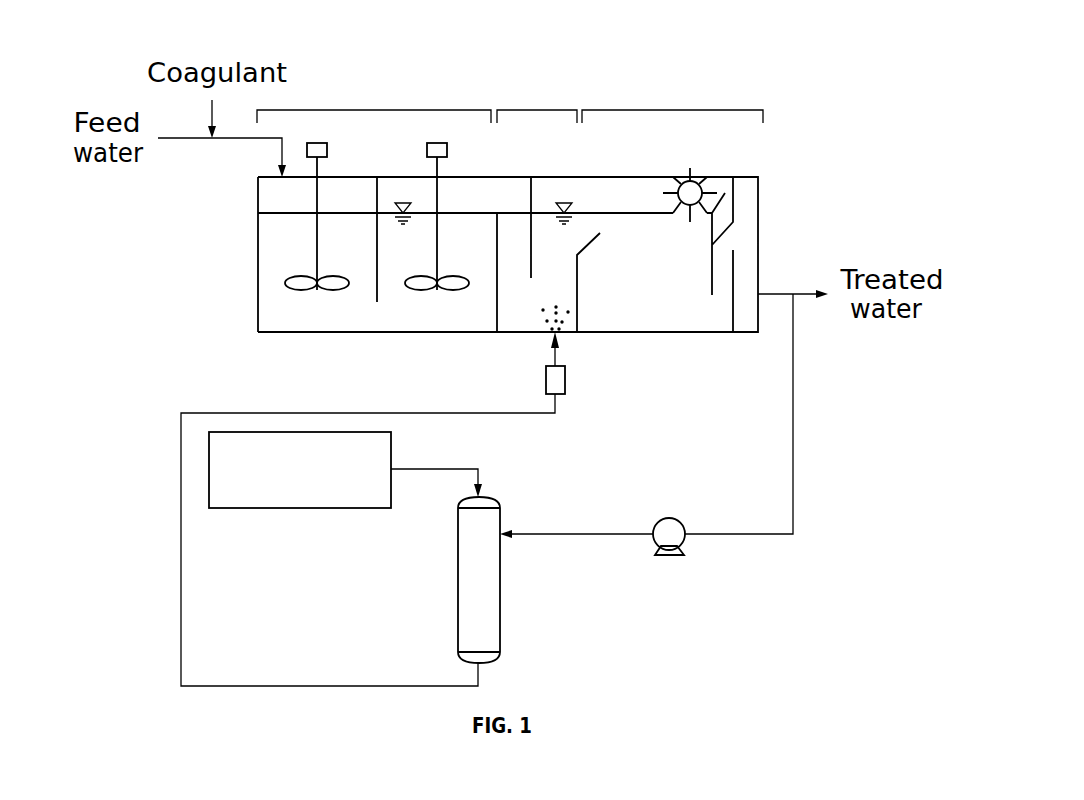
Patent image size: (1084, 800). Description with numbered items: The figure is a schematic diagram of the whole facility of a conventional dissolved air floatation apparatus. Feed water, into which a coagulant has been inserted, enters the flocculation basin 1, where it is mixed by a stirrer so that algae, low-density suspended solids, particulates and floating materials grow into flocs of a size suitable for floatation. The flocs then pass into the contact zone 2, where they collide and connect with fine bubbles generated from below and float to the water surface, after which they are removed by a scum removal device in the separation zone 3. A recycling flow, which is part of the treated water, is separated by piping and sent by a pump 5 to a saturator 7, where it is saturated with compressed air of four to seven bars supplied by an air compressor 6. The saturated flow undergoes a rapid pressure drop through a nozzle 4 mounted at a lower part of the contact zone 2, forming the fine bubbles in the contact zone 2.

The flocculation basin 1 is at (373, 108).
The contact zone 2 is at (536, 108).
The separation zone 3 is at (673, 108).
The nozzle 4 is at (565, 380).
The pump 5 is at (671, 523).
The air compressor 6 is at (343, 508).
The saturator 7 is at (493, 598).